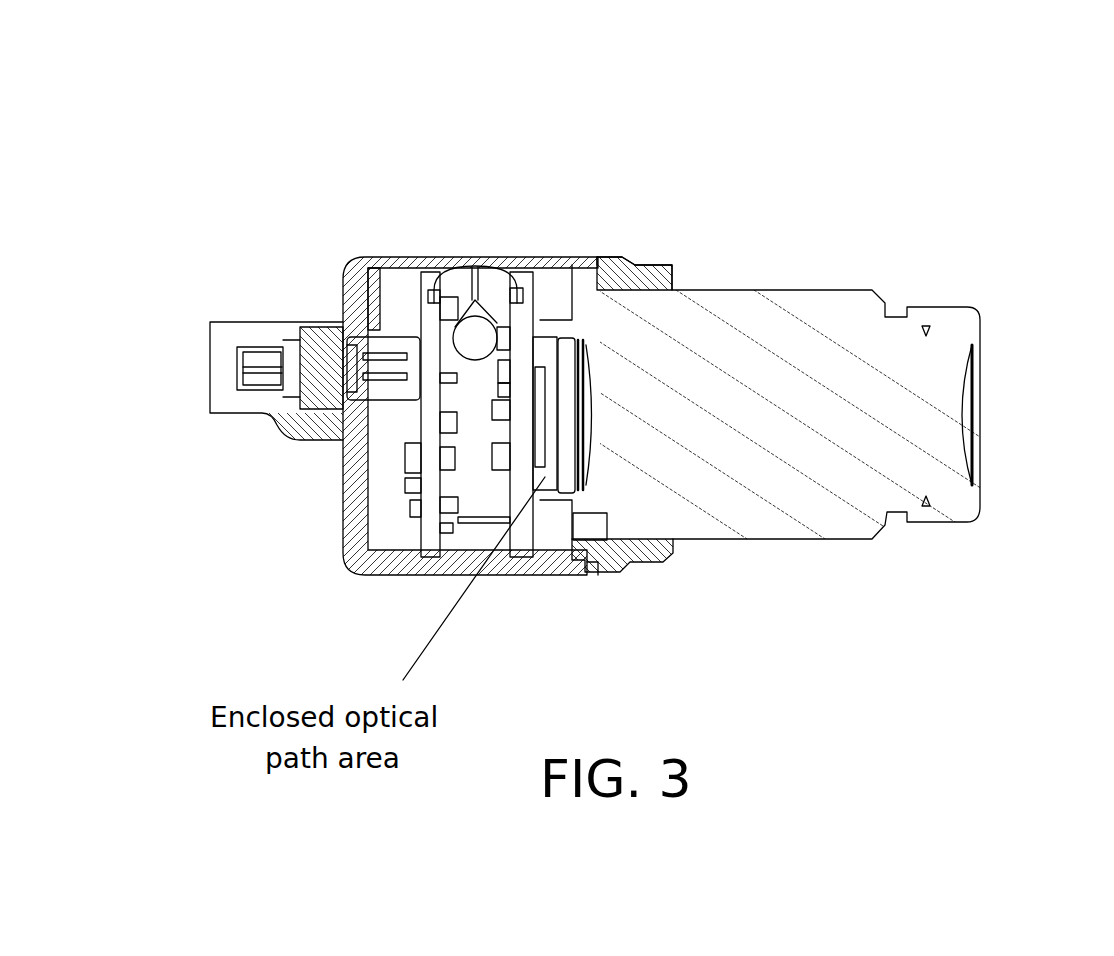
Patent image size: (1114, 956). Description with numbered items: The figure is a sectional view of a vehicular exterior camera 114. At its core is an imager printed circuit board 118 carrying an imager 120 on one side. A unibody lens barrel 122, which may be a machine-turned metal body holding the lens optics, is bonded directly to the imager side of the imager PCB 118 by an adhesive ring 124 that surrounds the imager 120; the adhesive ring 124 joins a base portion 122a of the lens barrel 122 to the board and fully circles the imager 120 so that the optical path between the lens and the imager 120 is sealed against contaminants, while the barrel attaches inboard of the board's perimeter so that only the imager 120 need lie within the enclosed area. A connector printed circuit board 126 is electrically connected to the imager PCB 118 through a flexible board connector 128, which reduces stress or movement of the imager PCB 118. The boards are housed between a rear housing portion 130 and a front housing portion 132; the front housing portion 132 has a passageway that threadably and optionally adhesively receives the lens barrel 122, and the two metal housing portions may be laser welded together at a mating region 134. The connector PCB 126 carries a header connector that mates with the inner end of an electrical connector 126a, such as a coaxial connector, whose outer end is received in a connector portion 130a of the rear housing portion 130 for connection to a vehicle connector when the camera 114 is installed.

The vehicular exterior camera 114 is at (960, 197).
The imager printed circuit board 118 is at (522, 322).
The imager 120 is at (545, 397).
The unibody lens barrel 122 is at (728, 292).
The base portion of the unibody lens barrel 122a is at (547, 327).
The adhesive ring 124 is at (535, 325).
The connector printed circuit board 126 is at (433, 340).
The electrical connector 126a is at (310, 353).
The flexible board connector 128 is at (462, 350).
The rear housing portion 130 is at (521, 576).
The connector portion 130a is at (240, 413).
The front housing portion 132 is at (668, 553).
The welded joint or mating region 134 is at (588, 566).